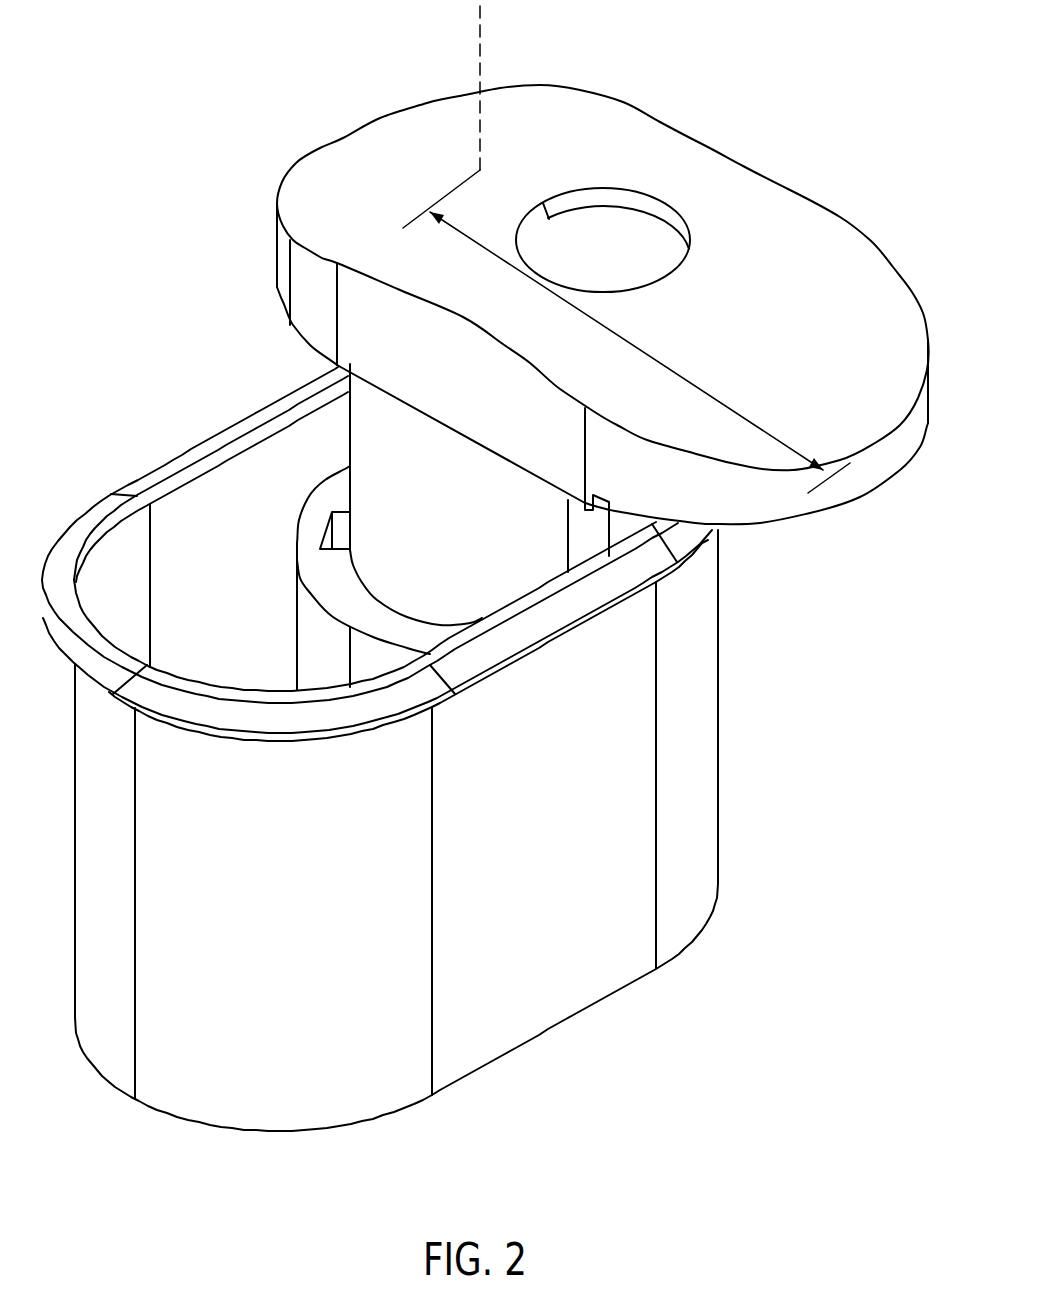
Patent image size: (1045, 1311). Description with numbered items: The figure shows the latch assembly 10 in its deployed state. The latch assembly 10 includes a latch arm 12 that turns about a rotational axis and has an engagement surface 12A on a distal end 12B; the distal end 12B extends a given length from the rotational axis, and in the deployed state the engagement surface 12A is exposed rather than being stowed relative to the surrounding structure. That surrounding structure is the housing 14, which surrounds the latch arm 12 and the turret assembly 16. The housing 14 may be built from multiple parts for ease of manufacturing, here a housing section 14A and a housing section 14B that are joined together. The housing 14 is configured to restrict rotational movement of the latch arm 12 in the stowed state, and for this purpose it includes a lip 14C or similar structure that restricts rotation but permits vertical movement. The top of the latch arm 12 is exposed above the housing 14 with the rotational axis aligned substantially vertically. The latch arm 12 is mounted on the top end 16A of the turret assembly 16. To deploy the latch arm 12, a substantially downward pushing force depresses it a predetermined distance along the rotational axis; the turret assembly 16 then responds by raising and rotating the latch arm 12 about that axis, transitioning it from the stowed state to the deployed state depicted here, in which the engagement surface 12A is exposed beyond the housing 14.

The latch assembly 10 is at (150, 130).
The latch arm 12 is at (745, 162).
The engagement surface 12A is at (868, 495).
The distal end 12B is at (824, 532).
The housing 14 is at (719, 713).
The housing section 14A is at (106, 1078).
The housing section 14B is at (169, 1112).
The lip 14C is at (85, 513).
The turret assembly 16 is at (272, 569).
The top end 16A is at (308, 525).